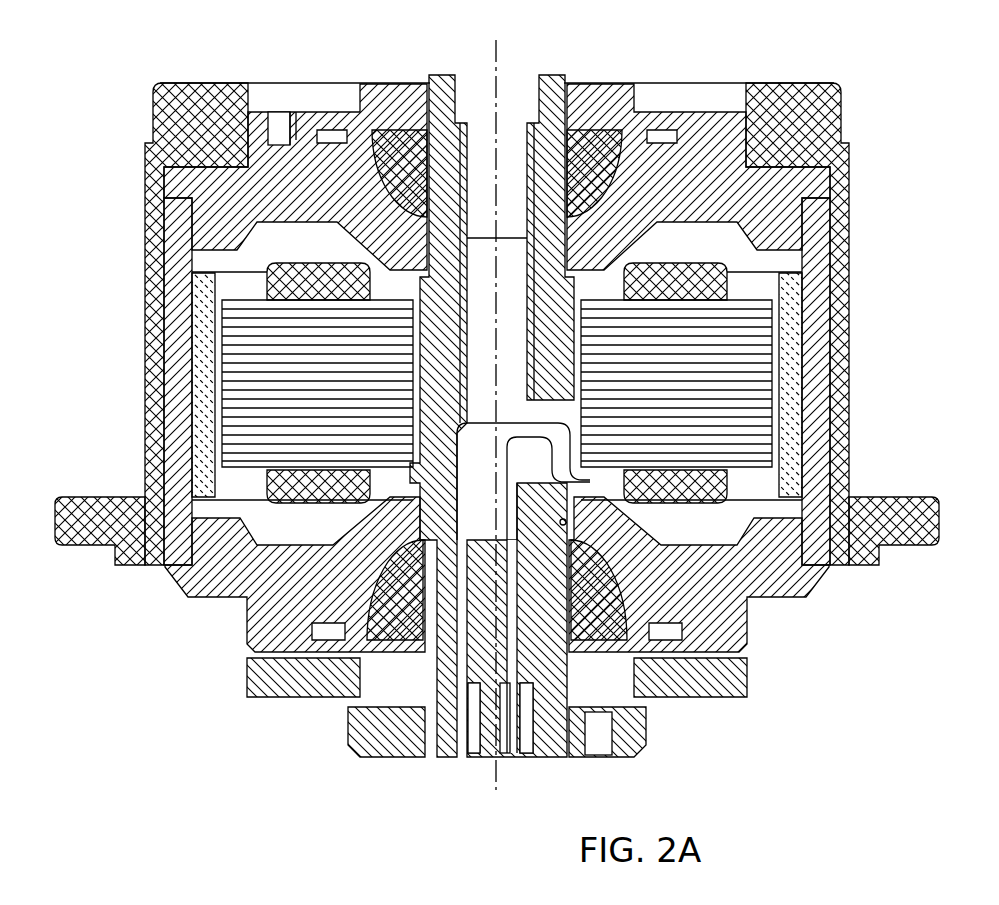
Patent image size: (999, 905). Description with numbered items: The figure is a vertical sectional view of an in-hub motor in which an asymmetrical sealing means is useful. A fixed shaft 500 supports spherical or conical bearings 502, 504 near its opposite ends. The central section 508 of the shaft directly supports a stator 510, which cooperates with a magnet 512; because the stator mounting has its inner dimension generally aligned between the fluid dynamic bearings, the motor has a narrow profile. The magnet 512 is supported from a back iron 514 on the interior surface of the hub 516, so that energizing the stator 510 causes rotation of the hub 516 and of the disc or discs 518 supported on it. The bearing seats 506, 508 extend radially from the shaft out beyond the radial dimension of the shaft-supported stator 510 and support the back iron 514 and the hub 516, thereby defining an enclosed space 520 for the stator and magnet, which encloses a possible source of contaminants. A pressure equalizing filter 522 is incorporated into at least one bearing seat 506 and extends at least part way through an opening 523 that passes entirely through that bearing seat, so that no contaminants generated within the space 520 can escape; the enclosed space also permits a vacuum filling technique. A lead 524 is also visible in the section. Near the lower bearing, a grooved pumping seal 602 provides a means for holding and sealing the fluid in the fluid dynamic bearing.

The fixed shaft 500 is at (553, 92).
The bearing 502 is at (340, 658).
The bearing 504 is at (377, 128).
The bearing seat 506 is at (713, 137).
The central section of the shaft / bearing seat 508 is at (772, 308).
The stator 510 is at (730, 400).
The magnet 512 is at (790, 343).
The back iron 514 is at (820, 240).
The hub 516 is at (845, 148).
The disc 518 is at (83, 577).
The enclosed space 520 is at (713, 253).
The pressure equalizing filter 522 is at (305, 112).
The opening 523 is at (283, 112).
The lead wire 524 is at (557, 410).
The grooved pumping seal 602 is at (568, 526).